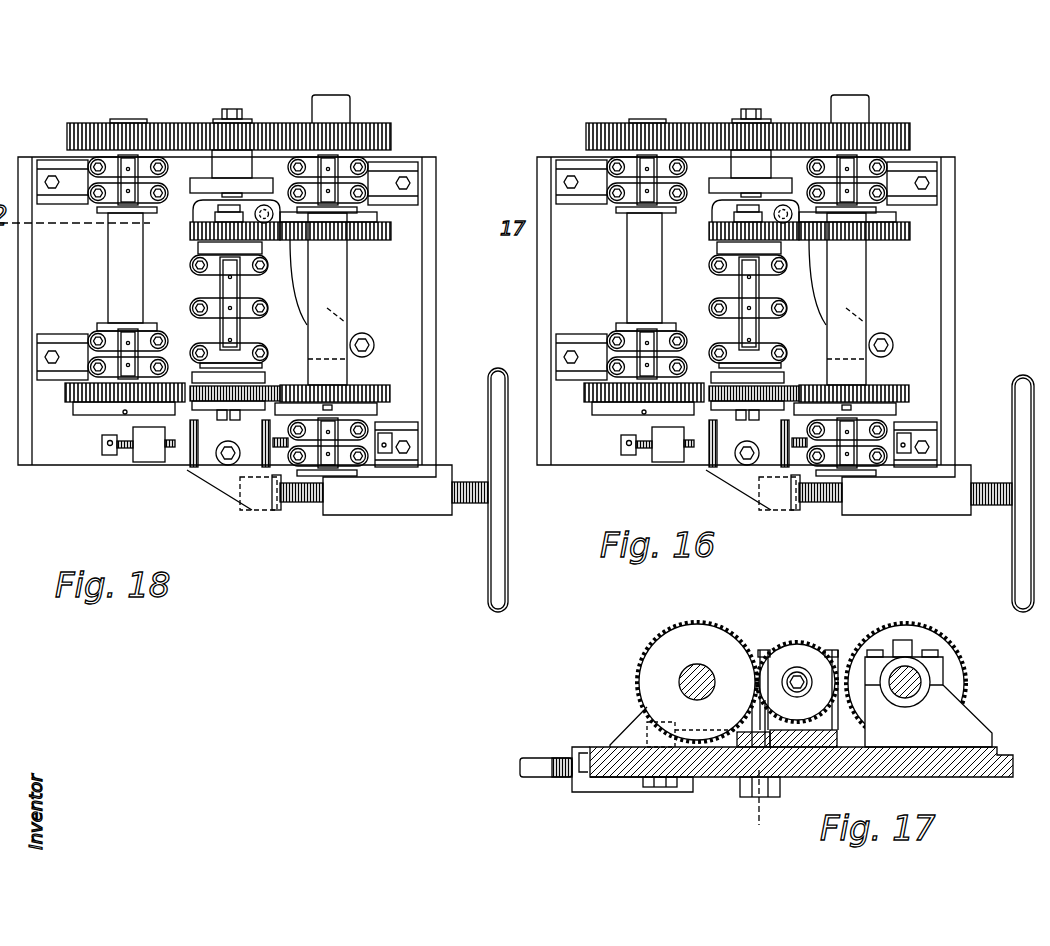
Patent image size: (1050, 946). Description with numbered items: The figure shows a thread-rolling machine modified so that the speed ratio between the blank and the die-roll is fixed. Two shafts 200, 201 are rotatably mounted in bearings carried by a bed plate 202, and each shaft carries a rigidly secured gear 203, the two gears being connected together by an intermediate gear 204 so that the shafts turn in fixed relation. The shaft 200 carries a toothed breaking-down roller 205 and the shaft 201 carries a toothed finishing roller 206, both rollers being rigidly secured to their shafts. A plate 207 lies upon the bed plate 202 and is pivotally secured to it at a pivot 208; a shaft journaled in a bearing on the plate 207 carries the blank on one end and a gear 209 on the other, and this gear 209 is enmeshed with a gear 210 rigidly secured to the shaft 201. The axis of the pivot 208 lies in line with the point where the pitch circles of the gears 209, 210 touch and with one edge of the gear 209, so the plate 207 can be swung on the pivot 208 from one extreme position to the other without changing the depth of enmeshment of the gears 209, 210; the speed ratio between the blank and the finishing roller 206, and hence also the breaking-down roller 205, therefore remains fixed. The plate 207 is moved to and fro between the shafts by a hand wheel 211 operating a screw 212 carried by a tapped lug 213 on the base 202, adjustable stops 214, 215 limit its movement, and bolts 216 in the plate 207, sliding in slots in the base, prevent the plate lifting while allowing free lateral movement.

In FIG. 18, the shaft 200 is at (124, 277).
In FIG. 16, the shaft 200 is at (642, 295).
In FIG. 17, the shaft 200 is at (912, 682).
In FIG. 18, the shaft 201 is at (330, 275).
In FIG. 16, the shaft 201 is at (848, 275).
In FIG. 17, the shaft 201 is at (690, 672).
In FIG. 18, the bed plate 202 is at (617, 283).
In FIG. 16, the bed plate 202 is at (746, 311).
In FIG. 18, the gear 203 is at (67, 134).
In FIG. 16, the gear 203 is at (487, 120).
In FIG. 18, the intermediate gear 204 is at (205, 123).
In FIG. 16, the intermediate gear 204 is at (735, 122).
In FIG. 18, the breaking-down roller 205 is at (67, 396).
In FIG. 16, the breaking-down roller 205 is at (586, 397).
In FIG. 18, the finishing roller 206 is at (392, 390).
In FIG. 16, the finishing roller 206 is at (910, 390).
In FIG. 18, the plate 207 is at (283, 318).
In FIG. 16, the plate 207 is at (802, 318).
In FIG. 18, the pivot 208 is at (210, 220).
In FIG. 16, the pivot 208 is at (730, 220).
In FIG. 17, the pivot 208 is at (728, 772).
In FIG. 18, the gear 209 is at (192, 235).
In FIG. 16, the gear 209 is at (710, 235).
In FIG. 17, the gear 209 is at (925, 640).
In FIG. 18, the gear 210 is at (392, 233).
In FIG. 16, the gear 210 is at (912, 234).
In FIG. 17, the gear 210 is at (705, 640).
In FIG. 18, the hand wheel 211 is at (497, 577).
In FIG. 16, the hand wheel 211 is at (1022, 560).
In FIG. 18, the screw 212 is at (307, 502).
In FIG. 16, the screw 212 is at (826, 503).
In FIG. 17, the screw 212 is at (553, 757).
In FIG. 18, the tapped lug 213 is at (420, 497).
In FIG. 16, the tapped lug 213 is at (866, 500).
In FIG. 18, the adjustable stop 214 is at (110, 456).
In FIG. 16, the adjustable stop 214 is at (629, 456).
In FIG. 18, the adjustable stop 215 is at (389, 433).
In FIG. 16, the adjustable stop 215 is at (907, 434).
In FIG. 18, the bolt 216 is at (375, 346).
In FIG. 16, the bolt 216 is at (895, 348).